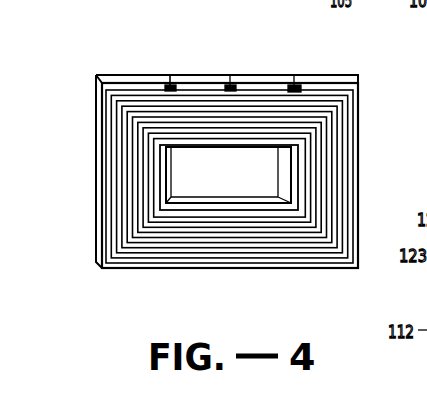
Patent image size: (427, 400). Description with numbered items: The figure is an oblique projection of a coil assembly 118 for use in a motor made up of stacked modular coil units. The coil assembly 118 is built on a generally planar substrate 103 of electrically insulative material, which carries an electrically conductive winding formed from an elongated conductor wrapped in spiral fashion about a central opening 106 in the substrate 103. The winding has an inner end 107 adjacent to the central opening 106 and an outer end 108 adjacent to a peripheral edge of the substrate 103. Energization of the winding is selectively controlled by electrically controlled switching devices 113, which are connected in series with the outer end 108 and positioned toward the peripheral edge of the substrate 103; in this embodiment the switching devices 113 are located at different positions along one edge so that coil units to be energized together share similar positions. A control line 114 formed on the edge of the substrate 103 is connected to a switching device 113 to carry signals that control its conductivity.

The substrate 103 is at (96, 201).
The outer end 108 is at (121, 88).
The central opening 106 is at (237, 147).
The inner end 107 is at (163, 156).
The switching device 113 is at (175, 85).
The control line 114 is at (169, 79).
The coil assembly 118 is at (359, 77).